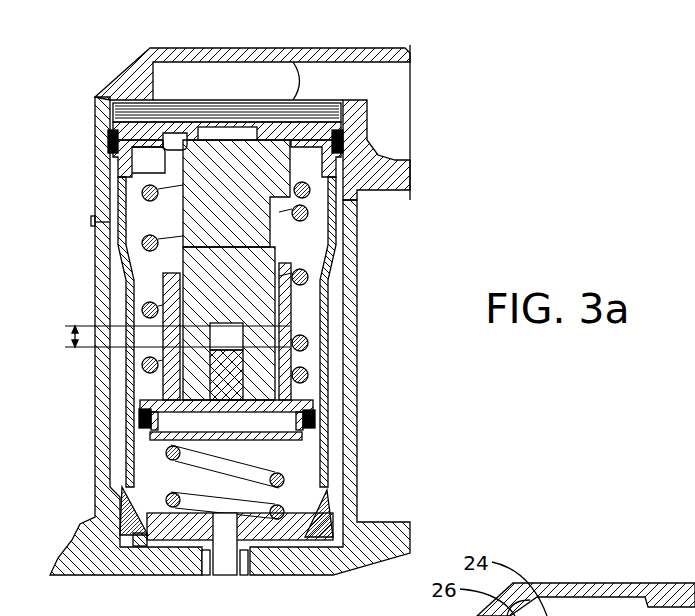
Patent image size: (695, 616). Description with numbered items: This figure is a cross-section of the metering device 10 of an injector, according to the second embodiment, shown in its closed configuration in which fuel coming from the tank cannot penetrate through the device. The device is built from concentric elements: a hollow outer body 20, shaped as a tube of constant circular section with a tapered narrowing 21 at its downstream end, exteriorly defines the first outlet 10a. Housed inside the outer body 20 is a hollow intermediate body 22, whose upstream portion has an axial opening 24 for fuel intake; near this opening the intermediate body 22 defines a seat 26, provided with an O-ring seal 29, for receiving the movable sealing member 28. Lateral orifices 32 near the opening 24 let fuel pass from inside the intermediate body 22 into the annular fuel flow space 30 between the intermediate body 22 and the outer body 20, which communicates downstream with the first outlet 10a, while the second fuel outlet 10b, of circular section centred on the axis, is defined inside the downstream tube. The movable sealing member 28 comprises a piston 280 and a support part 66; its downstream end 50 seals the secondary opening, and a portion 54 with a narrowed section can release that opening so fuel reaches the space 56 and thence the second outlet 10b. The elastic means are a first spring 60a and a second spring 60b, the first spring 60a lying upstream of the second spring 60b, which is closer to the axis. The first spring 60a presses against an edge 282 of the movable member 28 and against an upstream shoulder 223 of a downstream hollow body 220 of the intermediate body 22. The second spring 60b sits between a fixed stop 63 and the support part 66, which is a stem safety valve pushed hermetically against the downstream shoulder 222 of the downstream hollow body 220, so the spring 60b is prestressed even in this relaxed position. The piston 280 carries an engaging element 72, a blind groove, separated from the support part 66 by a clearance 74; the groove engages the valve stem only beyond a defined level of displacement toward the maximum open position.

The metering device 10 is at (432, 198).
The first outlet 10a is at (230, 528).
The second fuel outlet 10b is at (180, 528).
The hollow outer body 20 is at (347, 505).
The tapered narrowing 21 is at (135, 541).
The hollow intermediate body 22 is at (113, 155).
The opening 24 is at (228, 133).
The seat 26 is at (190, 133).
The movable sealing member 28 is at (234, 316).
The O-ring seal 29 is at (172, 137).
The annular fuel flow space 30 is at (117, 252).
The orifices 32 is at (125, 168).
The downstream end 50 is at (177, 377).
The portion with a narrowed section 54 is at (190, 365).
The space 56 is at (220, 448).
The first spring 60a is at (310, 280).
The second spring 60b is at (270, 468).
The fixed stop 63 is at (260, 542).
The support part 66 is at (148, 405).
The engaging element 72 is at (240, 335).
The clearance 74 is at (164, 336).
The downstream hollow body 220 is at (290, 394).
The downstream shoulder 222 is at (310, 404).
The upstream shoulder 223 is at (317, 393).
The piston 280 is at (257, 235).
The edge 282 is at (307, 173).